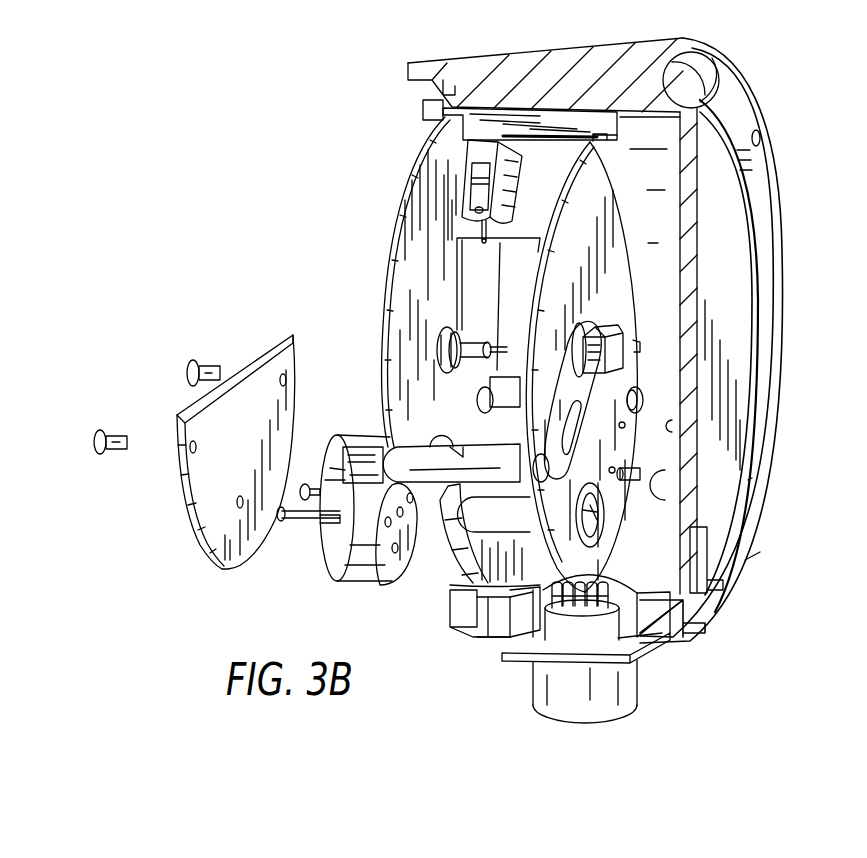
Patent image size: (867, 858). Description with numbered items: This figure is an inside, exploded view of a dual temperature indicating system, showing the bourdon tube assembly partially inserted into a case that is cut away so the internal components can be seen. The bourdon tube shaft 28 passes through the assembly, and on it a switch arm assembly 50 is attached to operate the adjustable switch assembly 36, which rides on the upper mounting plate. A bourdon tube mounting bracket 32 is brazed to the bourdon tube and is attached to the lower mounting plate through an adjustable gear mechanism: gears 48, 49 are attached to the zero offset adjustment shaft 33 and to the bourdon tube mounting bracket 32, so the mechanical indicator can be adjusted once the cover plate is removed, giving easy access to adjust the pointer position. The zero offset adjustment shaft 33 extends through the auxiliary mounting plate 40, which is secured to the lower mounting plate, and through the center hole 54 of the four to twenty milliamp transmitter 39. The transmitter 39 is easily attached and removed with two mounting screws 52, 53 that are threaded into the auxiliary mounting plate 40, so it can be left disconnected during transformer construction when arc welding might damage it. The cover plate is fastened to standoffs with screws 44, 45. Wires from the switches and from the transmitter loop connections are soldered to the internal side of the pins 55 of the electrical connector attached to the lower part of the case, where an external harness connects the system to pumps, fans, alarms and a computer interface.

The shaft 28 is at (453, 302).
The bourdon tube mounting bracket 32 is at (388, 400).
The zero offset adjustment shaft 33 is at (440, 508).
The adjustable switch assembly 36 is at (468, 148).
The 4 to 20 milliamp transmitter 39 is at (338, 582).
The auxiliary mounting plate 40 is at (445, 565).
The screw 44 is at (112, 430).
The screw 45 is at (208, 360).
The gear 48 is at (625, 435).
The gear 49 is at (615, 507).
The switch arm assembly 50 is at (440, 345).
The mounting screw 52 is at (282, 518).
The mounting screw 53 is at (305, 484).
The center hole 54 is at (392, 590).
The pins 55 is at (612, 574).